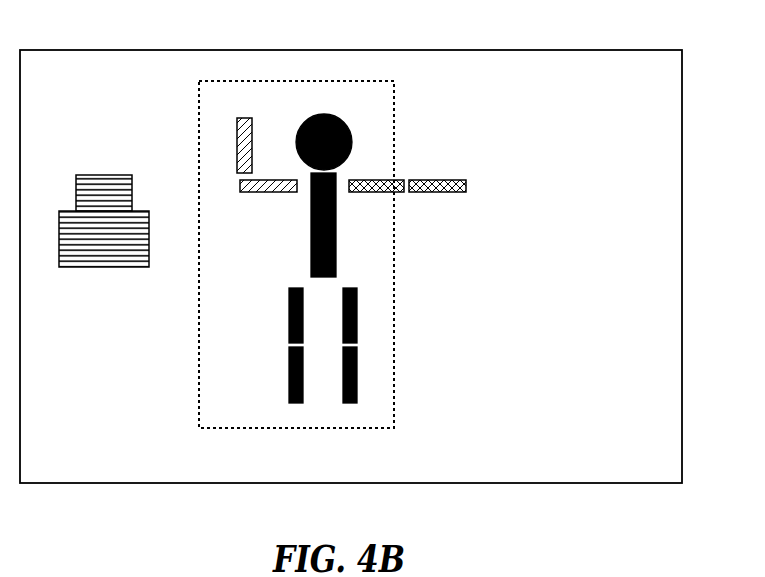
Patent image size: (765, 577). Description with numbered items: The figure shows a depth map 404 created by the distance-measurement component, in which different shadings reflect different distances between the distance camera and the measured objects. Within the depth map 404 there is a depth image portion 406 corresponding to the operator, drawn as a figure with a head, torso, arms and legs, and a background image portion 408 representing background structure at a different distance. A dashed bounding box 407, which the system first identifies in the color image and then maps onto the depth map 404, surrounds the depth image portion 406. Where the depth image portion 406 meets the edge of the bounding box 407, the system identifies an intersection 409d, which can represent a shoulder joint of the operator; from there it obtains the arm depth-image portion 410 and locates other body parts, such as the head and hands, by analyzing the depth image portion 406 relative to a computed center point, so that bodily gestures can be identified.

The depth map 404 is at (351, 254).
The depth image portion 406 is at (361, 261).
The bounding box 407 is at (364, 81).
The background image portion 408 is at (99, 175).
The intersection 409d is at (400, 174).
The arm depth-image portion 410 is at (440, 174).